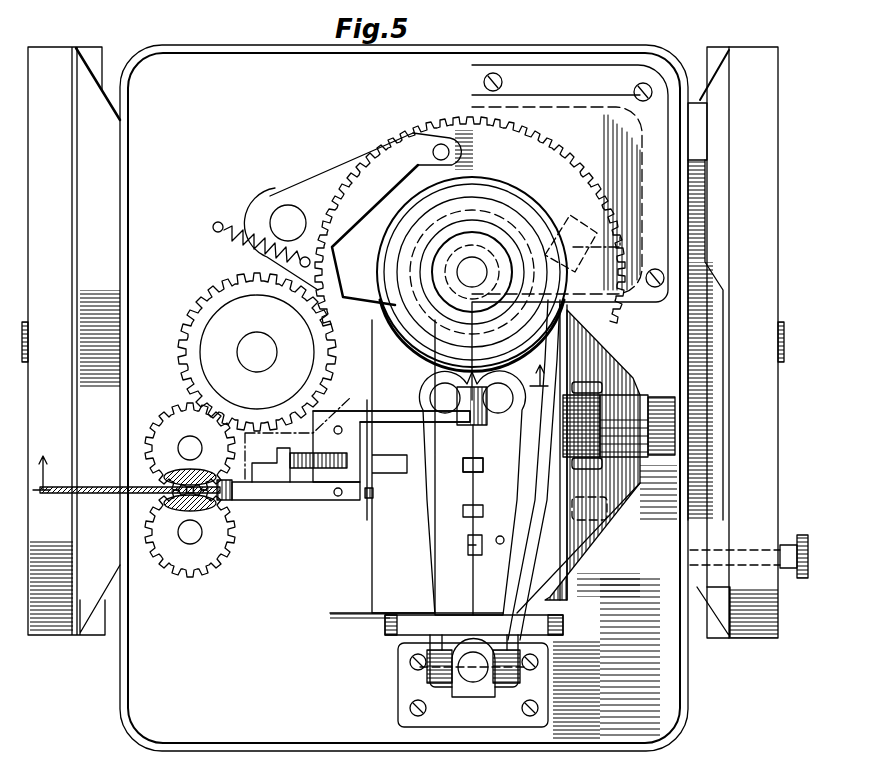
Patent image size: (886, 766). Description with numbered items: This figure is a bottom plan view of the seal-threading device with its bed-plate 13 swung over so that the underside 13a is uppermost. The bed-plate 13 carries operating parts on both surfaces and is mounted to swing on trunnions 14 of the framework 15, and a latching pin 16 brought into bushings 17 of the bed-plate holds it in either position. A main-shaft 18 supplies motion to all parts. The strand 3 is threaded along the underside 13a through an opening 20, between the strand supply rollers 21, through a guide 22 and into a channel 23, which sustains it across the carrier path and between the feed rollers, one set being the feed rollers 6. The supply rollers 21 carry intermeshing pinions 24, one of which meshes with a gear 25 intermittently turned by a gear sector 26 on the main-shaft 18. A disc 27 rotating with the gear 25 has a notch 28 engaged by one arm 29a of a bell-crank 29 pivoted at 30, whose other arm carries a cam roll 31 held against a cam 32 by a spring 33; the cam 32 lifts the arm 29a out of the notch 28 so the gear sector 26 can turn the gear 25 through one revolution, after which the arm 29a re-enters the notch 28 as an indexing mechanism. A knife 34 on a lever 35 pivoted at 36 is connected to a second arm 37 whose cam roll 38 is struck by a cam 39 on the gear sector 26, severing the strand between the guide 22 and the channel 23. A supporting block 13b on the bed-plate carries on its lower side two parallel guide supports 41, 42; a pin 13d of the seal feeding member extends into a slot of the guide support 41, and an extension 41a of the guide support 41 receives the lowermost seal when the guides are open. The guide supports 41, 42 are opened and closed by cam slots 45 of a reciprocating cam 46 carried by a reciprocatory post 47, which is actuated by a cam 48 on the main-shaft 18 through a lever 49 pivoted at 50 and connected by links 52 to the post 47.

The strand 3 is at (100, 494).
The feed rollers 6 is at (290, 427).
The bed-plate 13 is at (124, 690).
The underside of bed-plate 13a is at (462, 602).
The supporting block 13b is at (385, 588).
The pin 13d is at (500, 545).
The trunnions 14 is at (30, 340).
The framework 15 is at (403, 342).
The pin 16 is at (788, 570).
The bushings 17 is at (707, 132).
The main-shaft 18 is at (478, 268).
The opening 20 is at (102, 542).
The strand supply rollers 21 is at (236, 548).
The guide 22 is at (230, 498).
The channel 23 is at (367, 520).
The pinions 24 is at (180, 410).
The gear 25 is at (190, 306).
The gear sector 26 is at (458, 118).
The disc 27 is at (257, 352).
The notch 28 is at (298, 332).
The bell-crank 29 is at (308, 192).
The arm 29a is at (300, 324).
The pivot 30 is at (280, 205).
The cam roll 31 is at (410, 135).
The cam 32 is at (478, 188).
The spring 33 is at (216, 234).
The knife 34 is at (232, 492).
The lever 35 is at (312, 500).
The pivot 36 is at (345, 500).
The second arm 37 is at (388, 428).
The cam roll 38 is at (430, 398).
The cam 39 is at (585, 166).
The guide support 41 is at (472, 493).
The extension 41a is at (467, 544).
The guide support 42 is at (459, 480).
The cam slots 45 is at (500, 412).
The reciprocating cam 46 is at (400, 628).
The reciprocatory post 47 is at (470, 683).
The cam 48 is at (533, 230).
The lever 49 is at (570, 356).
The pivot 50 is at (540, 440).
The links 52 is at (410, 700).